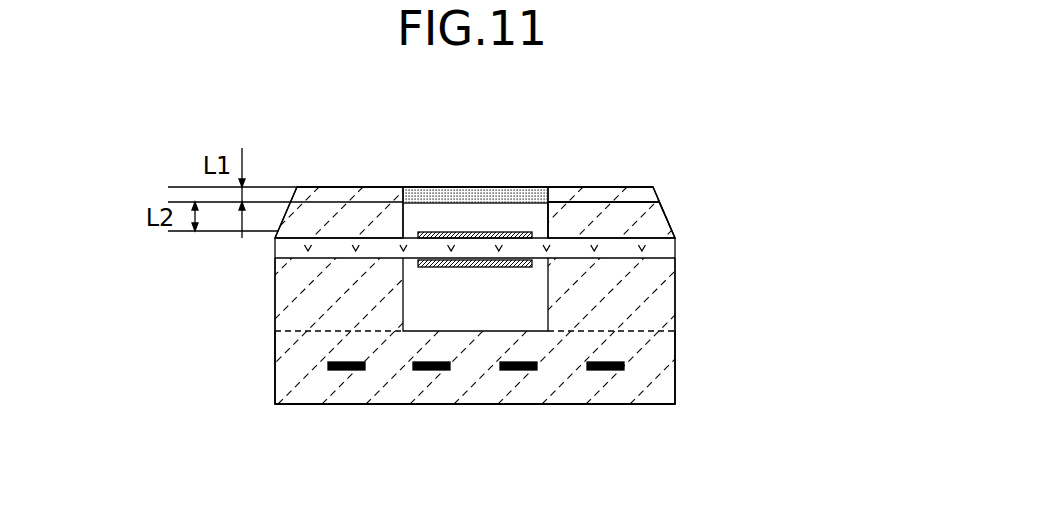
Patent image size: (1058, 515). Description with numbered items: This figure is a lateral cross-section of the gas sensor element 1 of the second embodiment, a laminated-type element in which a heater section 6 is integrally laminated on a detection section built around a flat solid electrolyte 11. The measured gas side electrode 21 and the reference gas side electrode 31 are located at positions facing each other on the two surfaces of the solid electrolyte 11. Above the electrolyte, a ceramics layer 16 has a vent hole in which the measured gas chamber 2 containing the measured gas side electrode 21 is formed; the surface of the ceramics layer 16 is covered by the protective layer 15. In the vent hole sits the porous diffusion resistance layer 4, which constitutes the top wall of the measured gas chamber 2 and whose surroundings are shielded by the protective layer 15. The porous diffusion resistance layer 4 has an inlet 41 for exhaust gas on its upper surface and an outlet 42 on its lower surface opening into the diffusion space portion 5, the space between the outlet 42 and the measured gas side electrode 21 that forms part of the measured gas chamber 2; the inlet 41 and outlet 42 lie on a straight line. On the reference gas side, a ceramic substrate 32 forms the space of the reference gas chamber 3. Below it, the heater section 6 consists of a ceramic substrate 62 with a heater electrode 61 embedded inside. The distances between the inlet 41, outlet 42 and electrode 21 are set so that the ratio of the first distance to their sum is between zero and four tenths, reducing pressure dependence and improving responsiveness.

The gas sensor element 1 is at (390, 166).
The measured gas chamber 2 is at (553, 207).
The reference gas chamber 3 is at (520, 307).
The porous diffusion resistance layer 4 is at (503, 218).
The diffusion space portion 5 is at (535, 208).
The heater section 6 is at (776, 341).
The solid electrolyte 11 is at (665, 250).
The protective layer 15 is at (643, 198).
The ceramics layer 16 is at (652, 220).
The measured gas side electrode 21 is at (468, 232).
The reference gas side electrode 31 is at (473, 262).
The ceramic substrate 32 is at (648, 312).
The inlet 41 is at (424, 187).
The outlet 42 is at (386, 211).
The heater electrode 61 is at (625, 358).
The ceramic substrate 62 is at (652, 388).